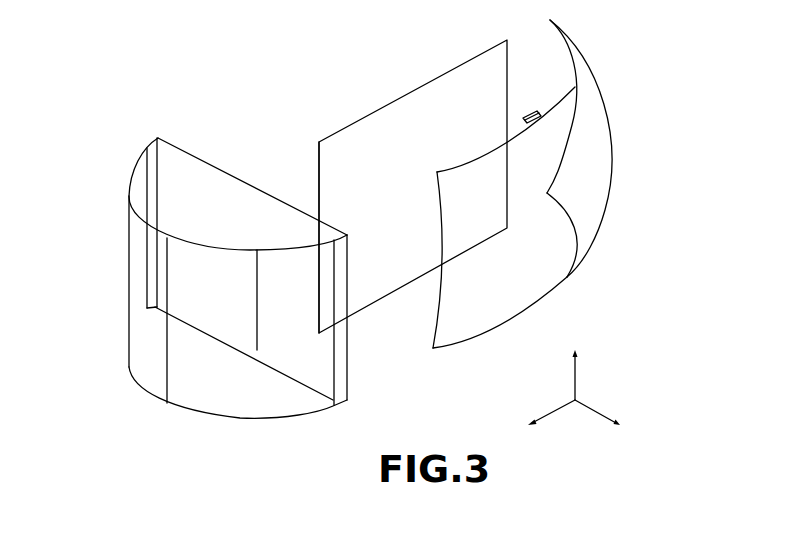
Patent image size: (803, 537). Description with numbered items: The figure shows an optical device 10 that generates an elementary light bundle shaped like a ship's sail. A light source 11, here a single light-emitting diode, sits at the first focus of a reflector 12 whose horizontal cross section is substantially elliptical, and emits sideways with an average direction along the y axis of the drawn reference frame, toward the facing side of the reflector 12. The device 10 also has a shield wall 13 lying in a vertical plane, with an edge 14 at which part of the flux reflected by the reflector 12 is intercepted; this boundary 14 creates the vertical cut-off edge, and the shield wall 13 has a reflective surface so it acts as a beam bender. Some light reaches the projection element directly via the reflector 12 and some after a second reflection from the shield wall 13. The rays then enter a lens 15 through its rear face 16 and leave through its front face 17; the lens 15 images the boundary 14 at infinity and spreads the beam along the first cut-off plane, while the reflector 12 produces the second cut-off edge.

The optical device 10 is at (138, 104).
The light source 11 is at (532, 109).
The reflector 12 is at (553, 270).
The shield wall 13 is at (396, 132).
The edge 14 is at (318, 191).
The lens 15 is at (212, 151).
The rear face 16 is at (257, 250).
The front face 17 is at (217, 407).